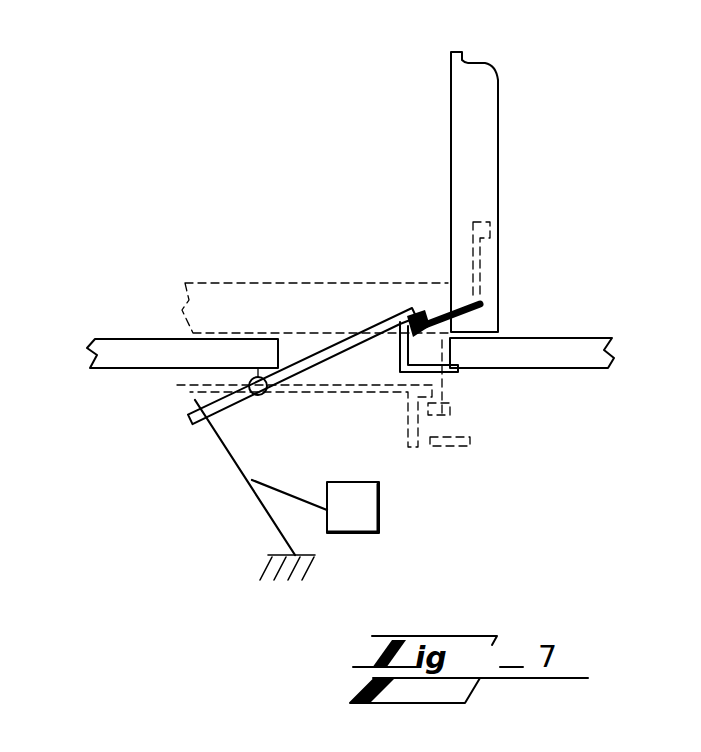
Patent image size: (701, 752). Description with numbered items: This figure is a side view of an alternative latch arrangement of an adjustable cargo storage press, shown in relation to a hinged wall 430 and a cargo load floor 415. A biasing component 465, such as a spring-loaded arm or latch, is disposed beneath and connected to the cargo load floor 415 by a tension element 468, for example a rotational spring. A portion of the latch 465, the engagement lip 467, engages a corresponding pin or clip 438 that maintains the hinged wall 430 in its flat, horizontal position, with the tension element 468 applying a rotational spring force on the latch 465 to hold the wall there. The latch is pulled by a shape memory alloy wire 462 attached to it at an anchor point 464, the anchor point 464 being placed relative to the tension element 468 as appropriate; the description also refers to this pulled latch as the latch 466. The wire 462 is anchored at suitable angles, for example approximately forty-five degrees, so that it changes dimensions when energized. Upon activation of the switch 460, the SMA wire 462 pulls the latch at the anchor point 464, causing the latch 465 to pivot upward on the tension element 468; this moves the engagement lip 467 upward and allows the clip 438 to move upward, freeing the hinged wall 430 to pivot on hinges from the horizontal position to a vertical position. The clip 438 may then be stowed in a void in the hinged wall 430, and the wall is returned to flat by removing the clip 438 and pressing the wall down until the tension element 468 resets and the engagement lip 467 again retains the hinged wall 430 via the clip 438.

The hinged wall 430 is at (483, 103).
The cargo load floor 415 is at (563, 370).
The clip 438 is at (427, 316).
The latch 466 is at (528, 492).
The spring-loaded latch 465 is at (408, 305).
The engagement lip 467 is at (408, 308).
The tension element 468 is at (255, 397).
The anchor point 464 is at (195, 400).
The SMA wire 462 is at (240, 462).
The activation switch 460 is at (380, 507).